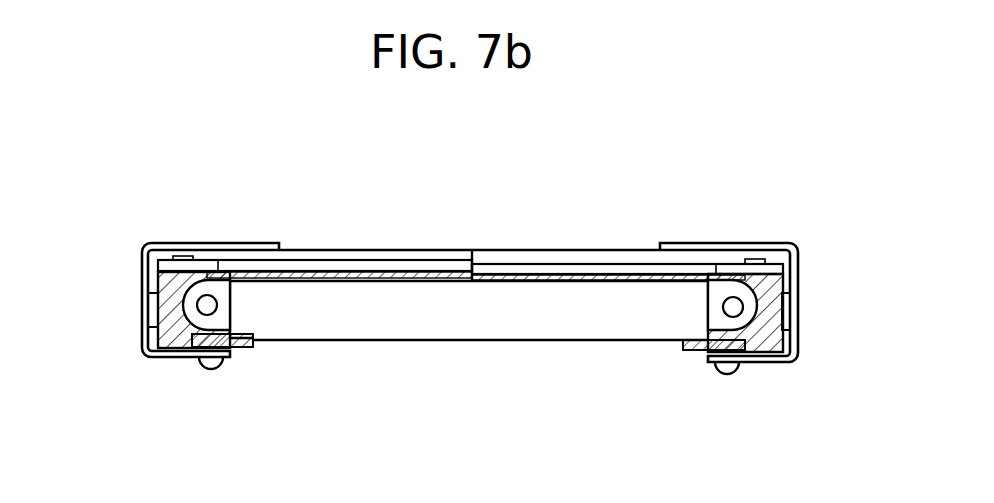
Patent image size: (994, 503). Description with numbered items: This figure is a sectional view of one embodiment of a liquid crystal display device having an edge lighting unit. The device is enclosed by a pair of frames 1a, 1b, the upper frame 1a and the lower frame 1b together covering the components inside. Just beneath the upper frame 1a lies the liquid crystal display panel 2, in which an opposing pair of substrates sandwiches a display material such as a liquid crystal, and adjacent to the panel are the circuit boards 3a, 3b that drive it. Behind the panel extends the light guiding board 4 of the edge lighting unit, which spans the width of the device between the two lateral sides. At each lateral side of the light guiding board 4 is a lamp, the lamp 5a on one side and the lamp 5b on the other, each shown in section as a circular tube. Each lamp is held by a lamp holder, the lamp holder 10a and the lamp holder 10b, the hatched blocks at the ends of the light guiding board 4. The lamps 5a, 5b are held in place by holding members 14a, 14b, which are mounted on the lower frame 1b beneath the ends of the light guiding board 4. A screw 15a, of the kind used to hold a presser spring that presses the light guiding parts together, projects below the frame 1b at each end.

The frame 1a is at (470, 237).
The frame 1b is at (477, 382).
The liquid crystal display panel 2 is at (470, 225).
The circuit board 3a is at (315, 215).
The circuit board 3b is at (661, 232).
The light guiding board 4 is at (469, 358).
The lamp 5a is at (140, 322).
The lamp 5b is at (797, 305).
The lamp holder 10a is at (174, 370).
The lamp holder 10b is at (795, 332).
The holding member 14a is at (252, 397).
The holding member 14b is at (694, 407).
The screw 15a is at (480, 412).